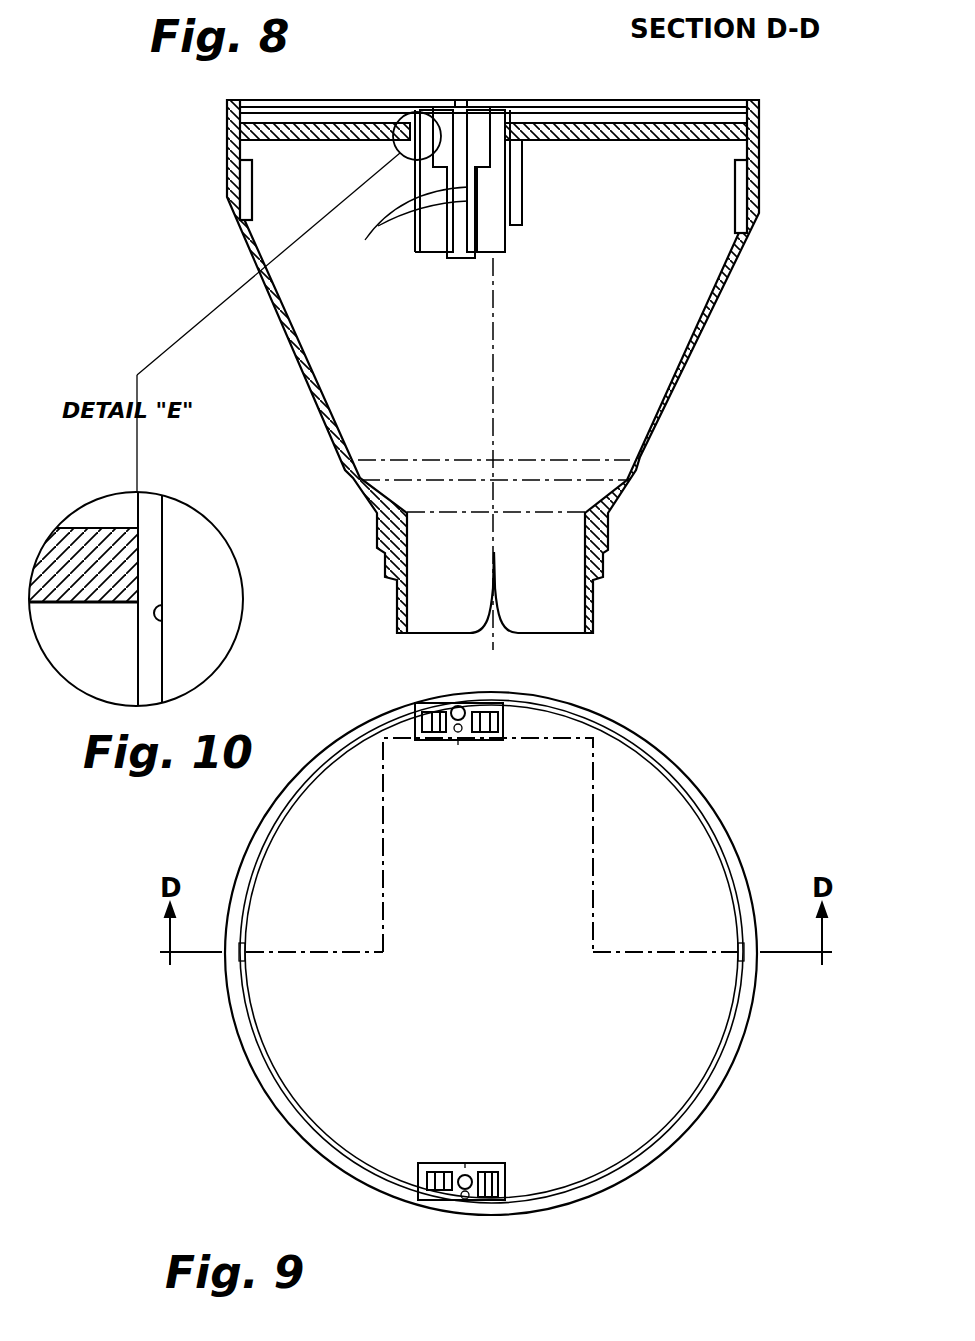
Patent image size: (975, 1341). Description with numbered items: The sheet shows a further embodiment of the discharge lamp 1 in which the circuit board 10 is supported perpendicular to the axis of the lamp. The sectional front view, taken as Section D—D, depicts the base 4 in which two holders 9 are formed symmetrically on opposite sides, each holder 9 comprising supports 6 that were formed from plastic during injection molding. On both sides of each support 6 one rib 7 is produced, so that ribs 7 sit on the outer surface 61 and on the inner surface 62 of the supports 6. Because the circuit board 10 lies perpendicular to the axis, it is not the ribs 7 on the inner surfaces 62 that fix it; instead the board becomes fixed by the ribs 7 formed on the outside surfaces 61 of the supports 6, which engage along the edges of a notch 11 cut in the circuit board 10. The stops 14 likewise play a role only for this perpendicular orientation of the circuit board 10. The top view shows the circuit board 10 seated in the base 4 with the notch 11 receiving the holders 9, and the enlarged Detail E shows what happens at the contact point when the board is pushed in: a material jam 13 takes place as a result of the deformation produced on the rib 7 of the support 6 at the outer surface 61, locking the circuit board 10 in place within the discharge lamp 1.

In FIG. 8, the discharge lamp 1 is at (490, 402).
In FIG. 8, the base 4 is at (705, 306).
In FIG. 9, the base 4 is at (733, 833).
In FIG. 8, the support 6 is at (437, 240).
In FIG. 10, the support 6 is at (197, 531).
In FIG. 9, the support 6 is at (443, 734).
In FIG. 8, the rib 7 is at (497, 114).
In FIG. 10, the rib 7 is at (145, 683).
In FIG. 9, the rib 7 is at (415, 743).
In FIG. 8, the holder 9 is at (462, 130).
In FIG. 9, the holder 9 is at (460, 706).
In FIG. 8, the circuit board 10 is at (357, 122).
In FIG. 10, the circuit board 10 is at (90, 527).
In FIG. 9, the circuit board 10 is at (505, 898).
In FIG. 9, the notch 11 is at (452, 742).
In FIG. 10, the material jam 13 is at (135, 605).
In FIG. 8, the stop 14 is at (517, 178).
In FIG. 8, the outer surface 61 is at (515, 124).
In FIG. 10, the outer surface 61 is at (156, 616).
In FIG. 9, the outer surface 61 is at (415, 716).
In FIG. 8, the inner surface 62 is at (402, 220).
In FIG. 9, the inner surface 62 is at (453, 703).